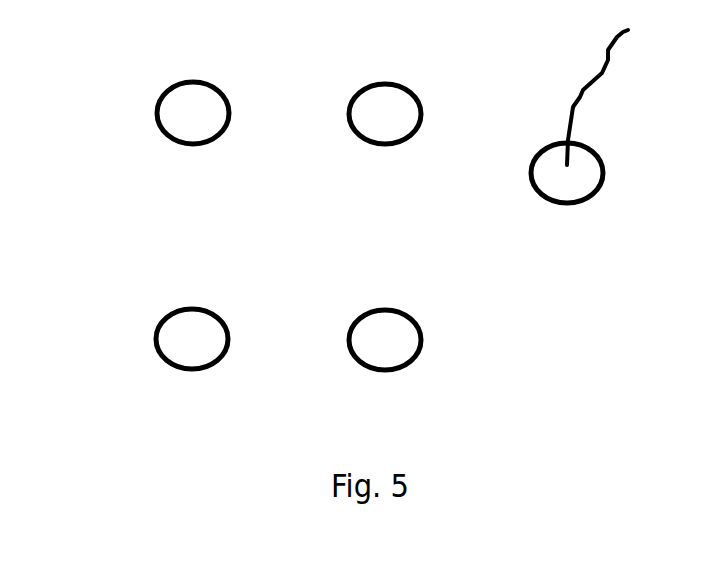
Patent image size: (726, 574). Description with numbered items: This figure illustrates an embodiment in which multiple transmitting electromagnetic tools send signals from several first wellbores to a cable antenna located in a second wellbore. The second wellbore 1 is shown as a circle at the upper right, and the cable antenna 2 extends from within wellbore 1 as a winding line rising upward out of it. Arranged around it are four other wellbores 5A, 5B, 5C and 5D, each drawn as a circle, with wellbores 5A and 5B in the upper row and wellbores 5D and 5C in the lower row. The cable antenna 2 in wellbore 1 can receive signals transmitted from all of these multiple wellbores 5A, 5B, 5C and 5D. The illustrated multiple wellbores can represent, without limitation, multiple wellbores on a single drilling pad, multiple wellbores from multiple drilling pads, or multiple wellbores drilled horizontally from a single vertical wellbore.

The wellbore 1 is at (605, 172).
The cable antenna 2 is at (607, 63).
The wellbore 5A is at (165, 92).
The wellbore 5B is at (383, 82).
The wellbore 5C is at (358, 315).
The wellbore 5D is at (153, 337).